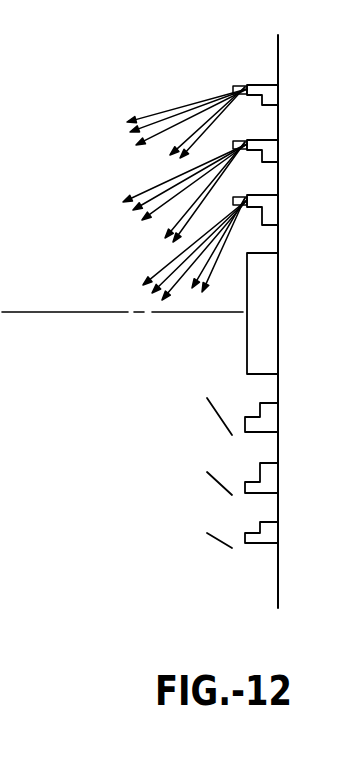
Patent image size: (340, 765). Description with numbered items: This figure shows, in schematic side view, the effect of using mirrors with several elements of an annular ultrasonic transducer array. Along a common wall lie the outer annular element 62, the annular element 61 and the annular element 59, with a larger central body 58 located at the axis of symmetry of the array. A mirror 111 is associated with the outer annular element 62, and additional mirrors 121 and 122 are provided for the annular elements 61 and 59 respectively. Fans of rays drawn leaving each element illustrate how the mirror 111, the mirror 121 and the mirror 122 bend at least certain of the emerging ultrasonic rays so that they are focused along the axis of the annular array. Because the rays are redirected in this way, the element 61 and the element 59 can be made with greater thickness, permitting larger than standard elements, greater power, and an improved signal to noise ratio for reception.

The light blocking member 58 is at (256, 348).
The annular element 59 is at (268, 200).
The annular element 61 is at (268, 142).
The outer annular element 62 is at (268, 90).
The mirror 111 is at (237, 90).
The mirror 121 is at (217, 152).
The mirror 122 is at (217, 212).